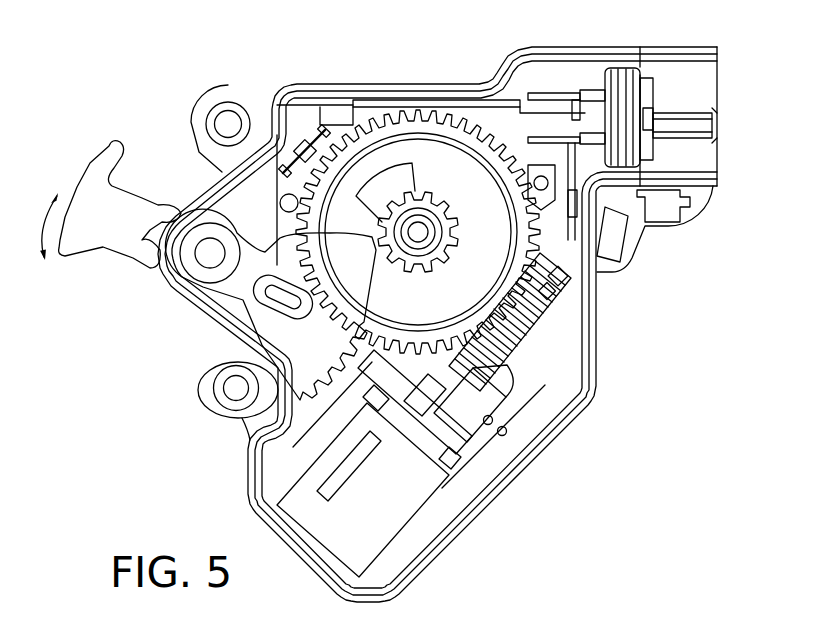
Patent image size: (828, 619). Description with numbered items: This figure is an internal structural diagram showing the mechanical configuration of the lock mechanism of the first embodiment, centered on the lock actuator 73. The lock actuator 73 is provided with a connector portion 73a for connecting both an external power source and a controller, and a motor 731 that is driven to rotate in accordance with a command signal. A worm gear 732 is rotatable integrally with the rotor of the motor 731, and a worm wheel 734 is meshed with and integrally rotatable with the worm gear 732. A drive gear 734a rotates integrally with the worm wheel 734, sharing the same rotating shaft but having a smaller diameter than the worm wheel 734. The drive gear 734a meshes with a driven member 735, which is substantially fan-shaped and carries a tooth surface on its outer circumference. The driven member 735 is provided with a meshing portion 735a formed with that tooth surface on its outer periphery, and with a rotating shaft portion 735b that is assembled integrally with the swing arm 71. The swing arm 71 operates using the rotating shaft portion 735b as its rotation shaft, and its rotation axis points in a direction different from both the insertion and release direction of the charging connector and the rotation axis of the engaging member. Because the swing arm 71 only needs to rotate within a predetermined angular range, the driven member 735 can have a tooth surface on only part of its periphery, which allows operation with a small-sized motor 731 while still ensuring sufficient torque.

The swing arm 71 is at (104, 137).
The lock actuator 73 is at (436, 78).
The connector portion 73a is at (725, 82).
The motor 731 is at (432, 500).
The worm gear 732 is at (548, 315).
The worm wheel 734 is at (403, 122).
The drive gear 734a is at (570, 276).
The driven member 735 is at (256, 339).
The meshing portion 735a is at (267, 410).
The rotating shaft portion 735b is at (199, 264).